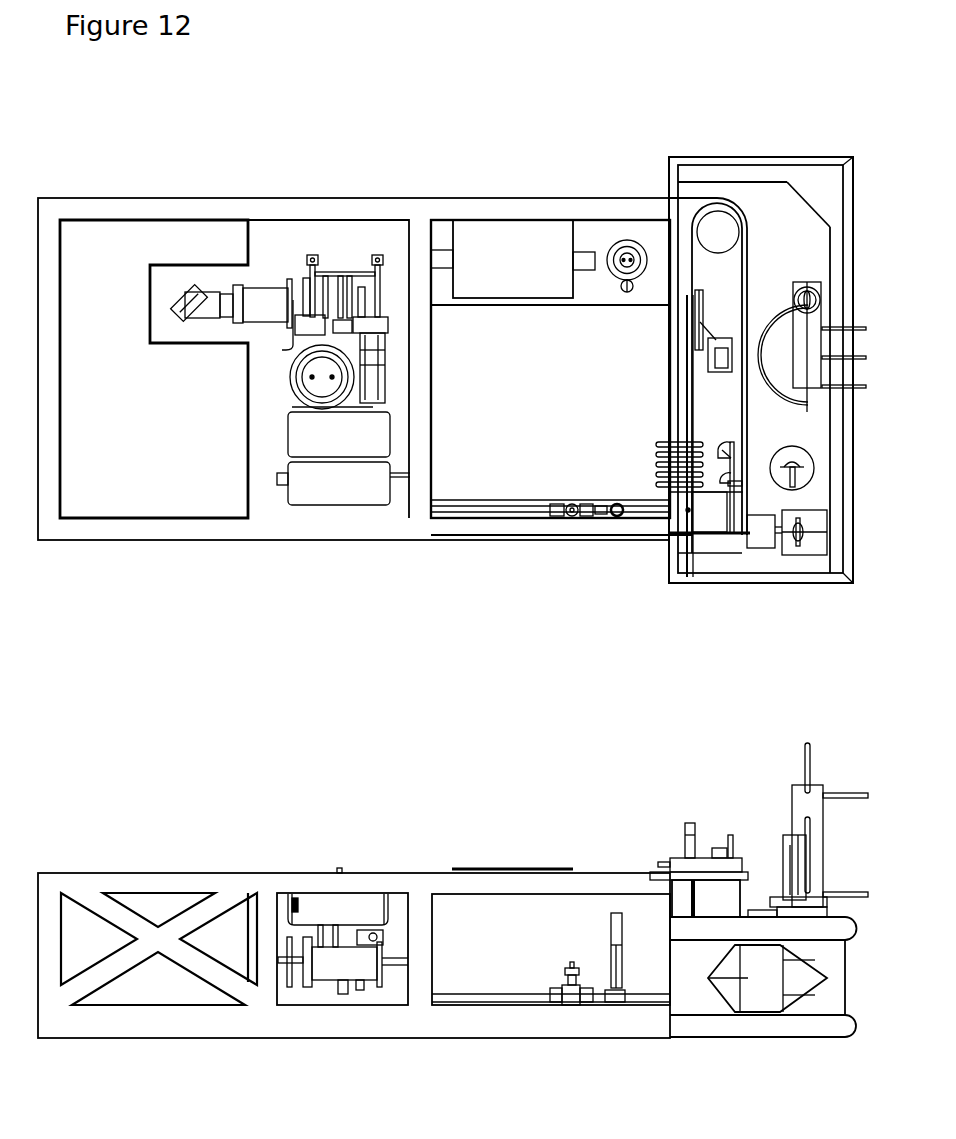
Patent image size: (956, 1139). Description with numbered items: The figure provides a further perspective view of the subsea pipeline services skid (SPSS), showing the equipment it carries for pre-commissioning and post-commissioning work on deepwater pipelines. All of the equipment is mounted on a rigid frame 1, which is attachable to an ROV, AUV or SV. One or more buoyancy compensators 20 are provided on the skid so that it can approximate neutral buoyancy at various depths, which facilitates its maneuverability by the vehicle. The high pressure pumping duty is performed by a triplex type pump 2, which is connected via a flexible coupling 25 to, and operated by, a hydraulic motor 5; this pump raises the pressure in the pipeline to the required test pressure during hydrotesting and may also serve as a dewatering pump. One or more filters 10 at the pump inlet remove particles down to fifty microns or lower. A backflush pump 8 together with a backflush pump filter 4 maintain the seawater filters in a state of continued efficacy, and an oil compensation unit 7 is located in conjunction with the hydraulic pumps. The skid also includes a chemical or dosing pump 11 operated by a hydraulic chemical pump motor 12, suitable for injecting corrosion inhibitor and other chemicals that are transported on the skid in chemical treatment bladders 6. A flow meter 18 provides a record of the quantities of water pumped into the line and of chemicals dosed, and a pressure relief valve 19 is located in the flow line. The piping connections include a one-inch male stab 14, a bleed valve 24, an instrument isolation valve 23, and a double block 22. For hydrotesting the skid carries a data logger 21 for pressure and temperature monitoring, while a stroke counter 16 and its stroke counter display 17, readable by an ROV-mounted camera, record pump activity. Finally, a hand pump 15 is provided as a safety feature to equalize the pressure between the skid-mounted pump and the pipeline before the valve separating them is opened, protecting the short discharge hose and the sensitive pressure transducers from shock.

The rigid frame 1 is at (345, 530).
The triplex type pump 2 is at (338, 300).
The backflush pump filter 4 is at (707, 222).
The hydraulic motor 5 is at (185, 292).
The chemical treatment bladders 6 is at (339, 435).
The oil compensation unit 7 is at (307, 392).
The backflush pump 8 is at (626, 258).
The filters 10 is at (491, 246).
The chemical or dosing pump 11 is at (380, 310).
The hydraulic chemical pump motor 12 is at (311, 265).
The 1" male stab 14 is at (805, 470).
The hand pump 15 is at (803, 537).
The stroke counter 16 is at (368, 402).
The stroke counter display 17 is at (722, 352).
The flow meter 18 is at (568, 1013).
The pressure relief valve 19 is at (615, 960).
The buoyancy compensator 20 is at (118, 245).
The data logger 21 is at (820, 798).
The double block 22 is at (733, 483).
The instrument isolation valve 23 is at (733, 485).
The bleed valve 24 is at (725, 458).
The flexible coupling 25 is at (263, 303).